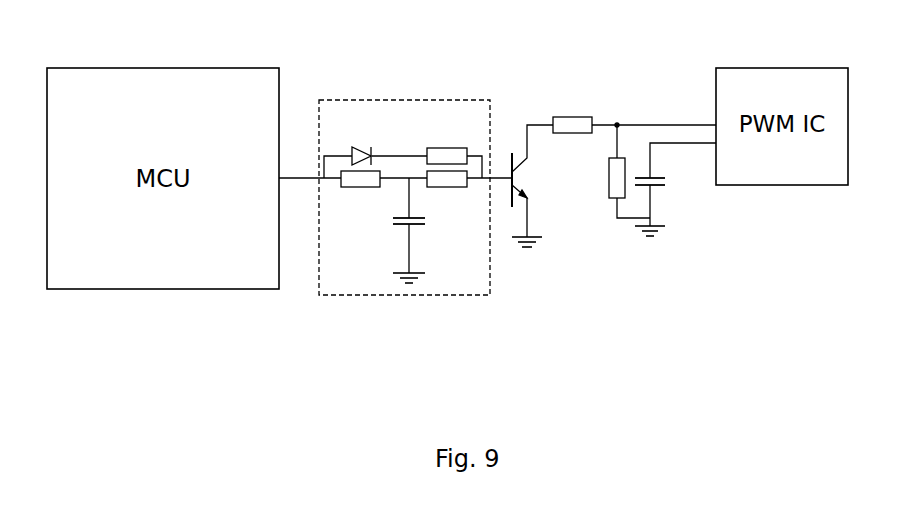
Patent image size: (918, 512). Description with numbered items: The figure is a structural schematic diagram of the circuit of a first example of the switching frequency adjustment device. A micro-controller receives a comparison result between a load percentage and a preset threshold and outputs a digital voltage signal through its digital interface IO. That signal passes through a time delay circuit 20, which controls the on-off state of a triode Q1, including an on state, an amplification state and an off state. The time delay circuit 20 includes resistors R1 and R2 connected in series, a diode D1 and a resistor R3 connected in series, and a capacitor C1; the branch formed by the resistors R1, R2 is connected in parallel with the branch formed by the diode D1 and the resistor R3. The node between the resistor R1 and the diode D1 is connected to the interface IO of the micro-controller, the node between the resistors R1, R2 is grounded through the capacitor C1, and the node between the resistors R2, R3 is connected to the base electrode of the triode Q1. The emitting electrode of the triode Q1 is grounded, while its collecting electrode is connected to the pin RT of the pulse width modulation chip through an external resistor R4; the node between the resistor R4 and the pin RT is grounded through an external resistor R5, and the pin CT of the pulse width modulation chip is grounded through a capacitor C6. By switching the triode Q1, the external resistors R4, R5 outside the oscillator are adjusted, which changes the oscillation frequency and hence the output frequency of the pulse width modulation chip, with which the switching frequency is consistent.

The time delay circuit 20 is at (407, 236).
The diode D1 is at (360, 139).
The resistor R1 is at (360, 194).
The resistor R2 is at (447, 194).
The resistor R3 is at (447, 138).
The external resistor R4 is at (572, 113).
The external resistor R5 is at (615, 171).
The capacitor C1 is at (398, 230).
The capacitor C6 is at (675, 189).
The triode Q1 is at (535, 186).
The digital interface IO is at (299, 160).
The RT pin RT is at (691, 113).
The CT pin CT is at (691, 159).